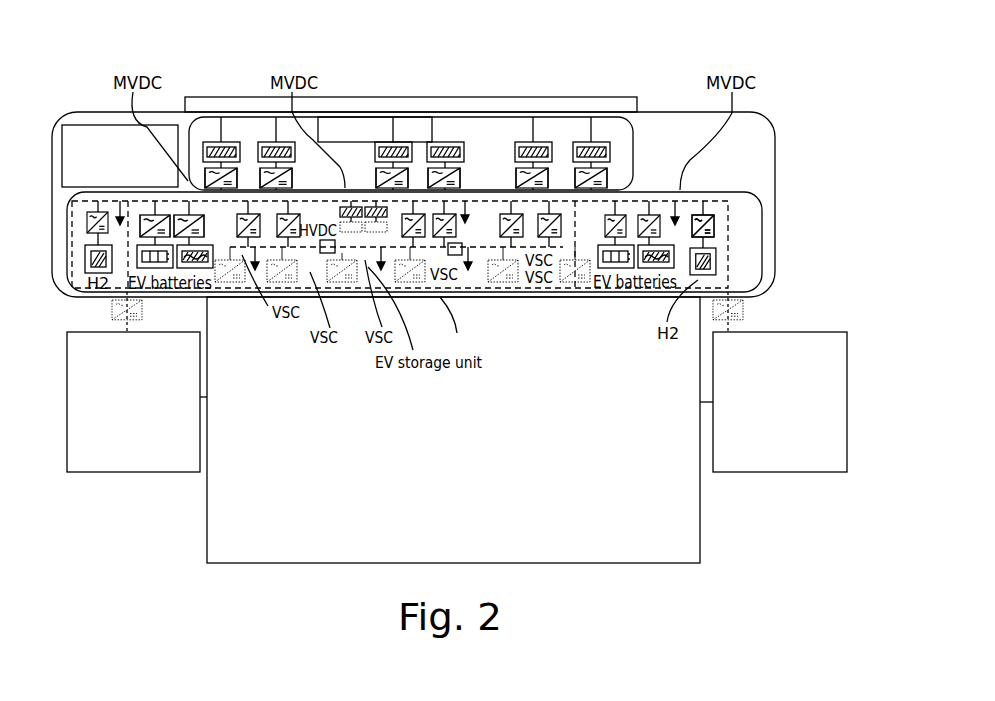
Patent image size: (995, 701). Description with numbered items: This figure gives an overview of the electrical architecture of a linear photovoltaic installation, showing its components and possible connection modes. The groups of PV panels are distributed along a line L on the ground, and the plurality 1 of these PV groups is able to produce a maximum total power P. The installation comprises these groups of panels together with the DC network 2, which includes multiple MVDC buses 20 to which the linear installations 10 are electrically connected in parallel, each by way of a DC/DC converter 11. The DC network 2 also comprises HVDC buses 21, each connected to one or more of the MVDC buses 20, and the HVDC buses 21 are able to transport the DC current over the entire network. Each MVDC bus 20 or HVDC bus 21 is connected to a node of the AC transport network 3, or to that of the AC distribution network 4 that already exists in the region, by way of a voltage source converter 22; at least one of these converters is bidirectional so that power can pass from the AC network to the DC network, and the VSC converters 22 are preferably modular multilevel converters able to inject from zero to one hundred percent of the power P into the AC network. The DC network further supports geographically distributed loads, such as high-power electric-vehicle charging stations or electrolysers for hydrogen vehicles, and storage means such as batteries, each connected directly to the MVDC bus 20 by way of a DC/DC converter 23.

The plurality of PV groups 1 is at (636, 125).
The DC network 2 is at (765, 268).
The AC transport network 3 is at (453, 430).
The AC distribution network 4 is at (457, 402).
The linear installation 10 is at (600, 142).
The DC/DC converter 11 is at (436, 131).
The MVDC bus 20 is at (115, 212).
The HVDC bus 21 is at (483, 290).
The voltage source converter 22 is at (112, 305).
The DC/DC converter 23 is at (717, 218).
The line L is at (220, 97).